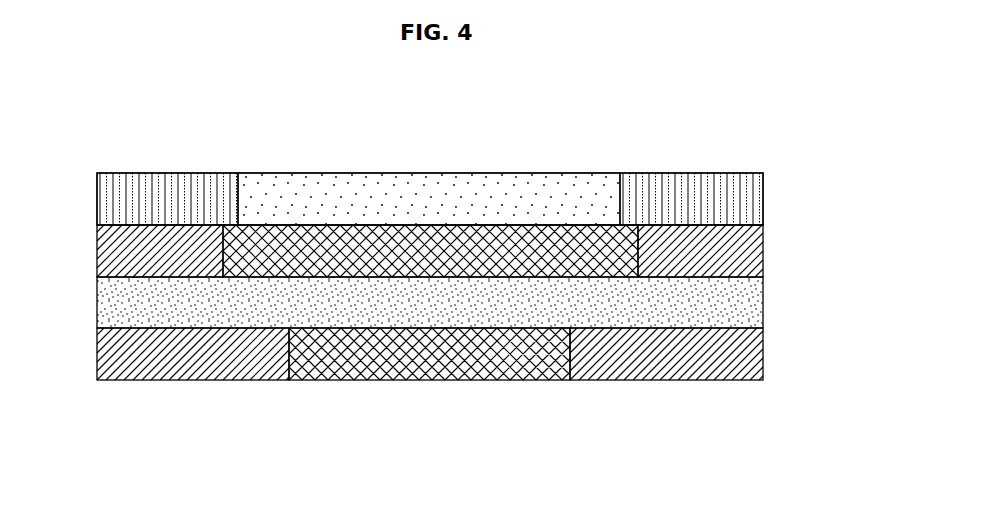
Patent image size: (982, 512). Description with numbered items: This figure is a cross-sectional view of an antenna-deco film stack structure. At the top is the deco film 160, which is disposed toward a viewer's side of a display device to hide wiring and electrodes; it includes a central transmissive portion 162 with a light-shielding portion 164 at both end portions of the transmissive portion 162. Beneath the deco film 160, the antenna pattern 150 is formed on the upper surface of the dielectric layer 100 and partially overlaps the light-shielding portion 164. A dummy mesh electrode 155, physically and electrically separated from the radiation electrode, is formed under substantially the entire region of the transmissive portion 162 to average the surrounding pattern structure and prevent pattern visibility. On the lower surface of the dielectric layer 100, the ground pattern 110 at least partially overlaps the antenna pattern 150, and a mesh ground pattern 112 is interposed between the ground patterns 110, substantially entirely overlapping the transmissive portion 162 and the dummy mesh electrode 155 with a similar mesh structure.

The dielectric layer 100 is at (758, 300).
The ground pattern 110 is at (165, 368).
The mesh ground pattern 112 is at (350, 368).
The antenna pattern 150 is at (97, 252).
The dummy mesh electrode 155 is at (438, 266).
The deco film 160 is at (712, 107).
The transmissive portion 162 is at (436, 172).
The light-shielding portion 164 is at (173, 172).